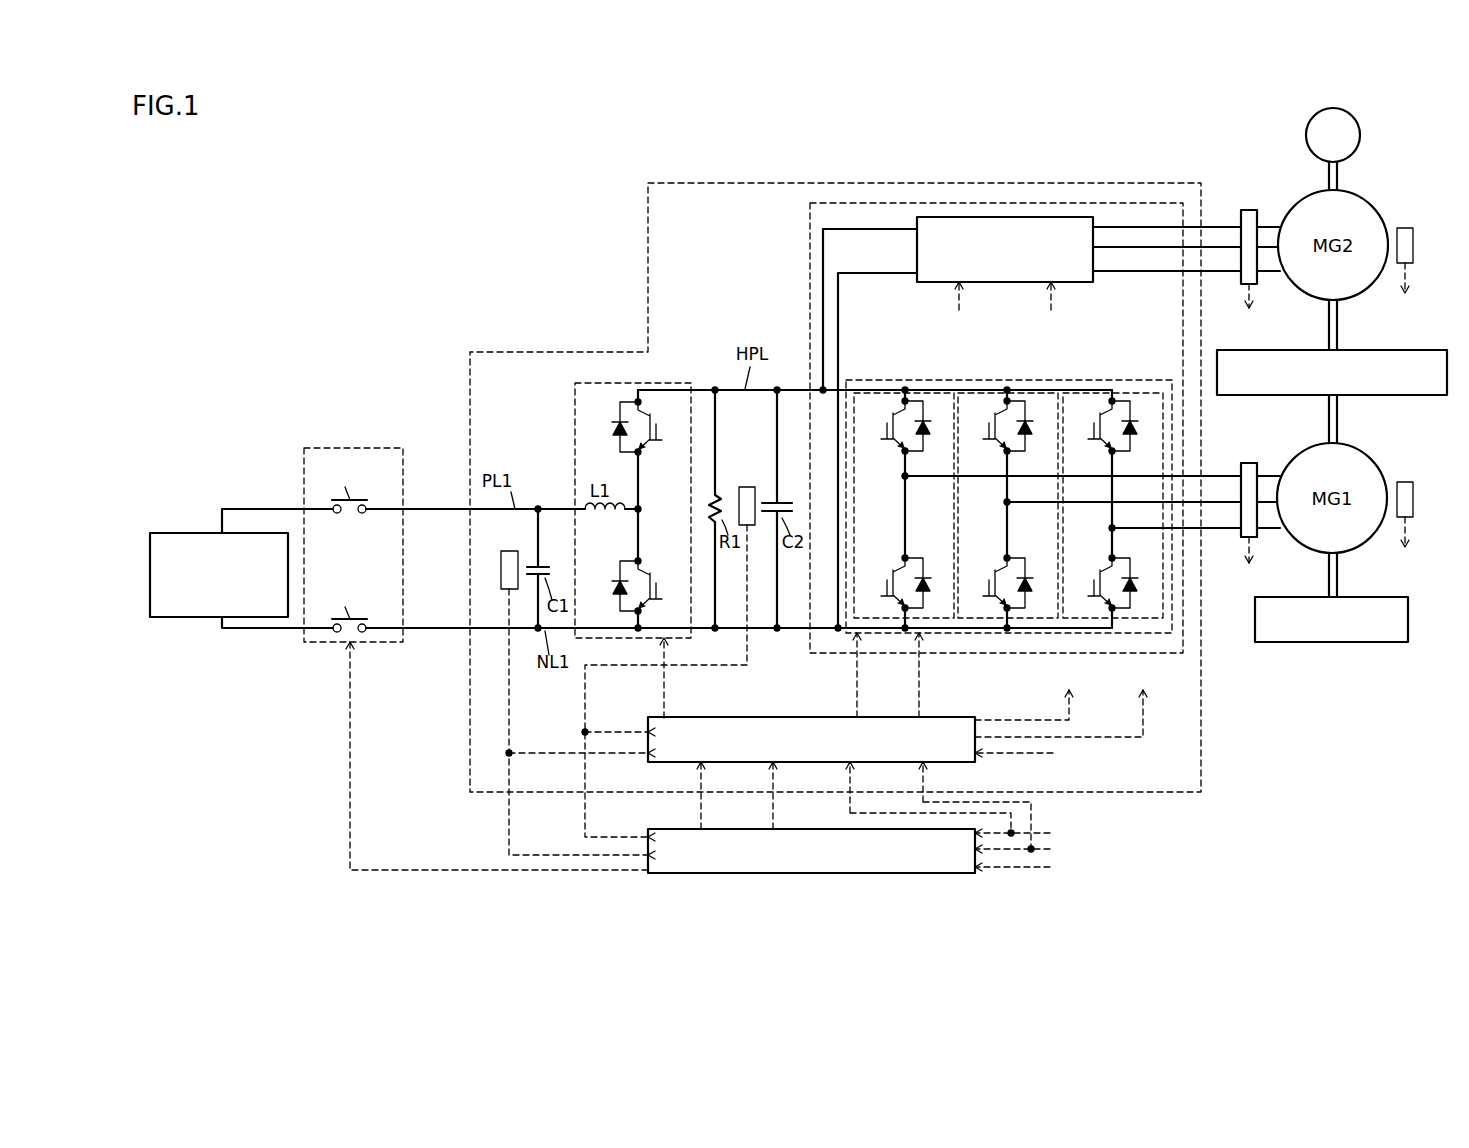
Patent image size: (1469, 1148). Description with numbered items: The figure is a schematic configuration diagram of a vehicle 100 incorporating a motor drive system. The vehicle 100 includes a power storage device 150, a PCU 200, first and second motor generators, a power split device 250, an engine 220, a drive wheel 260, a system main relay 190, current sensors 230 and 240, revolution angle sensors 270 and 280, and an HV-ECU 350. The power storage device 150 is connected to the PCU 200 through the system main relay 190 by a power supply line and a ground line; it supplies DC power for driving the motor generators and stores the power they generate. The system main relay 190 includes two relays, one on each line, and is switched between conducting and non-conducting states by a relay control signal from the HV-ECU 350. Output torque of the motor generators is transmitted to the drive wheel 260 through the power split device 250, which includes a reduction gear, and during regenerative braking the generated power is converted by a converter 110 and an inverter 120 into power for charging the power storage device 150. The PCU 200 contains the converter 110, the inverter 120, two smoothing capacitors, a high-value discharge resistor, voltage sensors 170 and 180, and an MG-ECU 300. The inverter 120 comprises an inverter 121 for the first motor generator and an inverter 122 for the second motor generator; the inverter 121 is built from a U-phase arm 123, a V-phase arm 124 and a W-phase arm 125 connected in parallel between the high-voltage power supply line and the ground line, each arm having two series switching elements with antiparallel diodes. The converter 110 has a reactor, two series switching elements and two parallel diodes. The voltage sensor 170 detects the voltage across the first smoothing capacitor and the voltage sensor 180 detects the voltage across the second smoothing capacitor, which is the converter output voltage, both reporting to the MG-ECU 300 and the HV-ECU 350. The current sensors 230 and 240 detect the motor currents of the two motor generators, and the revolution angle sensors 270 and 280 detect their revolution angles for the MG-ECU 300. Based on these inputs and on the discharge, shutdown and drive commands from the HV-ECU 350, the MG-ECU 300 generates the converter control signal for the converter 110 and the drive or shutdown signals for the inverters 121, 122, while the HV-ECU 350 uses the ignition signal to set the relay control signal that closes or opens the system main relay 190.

The vehicle 100 is at (265, 204).
The converter 110 is at (655, 384).
The inverter 120 is at (810, 238).
The inverter 121 is at (874, 380).
The inverter 122 is at (1092, 283).
The U-phase arm 123 is at (927, 390).
The V-phase arm 124 is at (1045, 390).
The W-phase arm 125 is at (1140, 393).
The power storage device 150 is at (190, 533).
The voltage sensor 170 is at (506, 551).
The voltage sensor 180 is at (747, 487).
The system main relay 190 is at (395, 448).
The PCU 200 is at (648, 208).
The engine 220 is at (1360, 597).
The current sensor 230 is at (1250, 463).
The current sensor 240 is at (1250, 210).
The power split device 250 is at (1358, 350).
The drive wheel 260 is at (1360, 127).
The revolution angle sensor 270 is at (1405, 482).
The revolution angle sensor 280 is at (1405, 228).
The MG-ECU 300 is at (965, 717).
The HV-ECU 350 is at (910, 873).